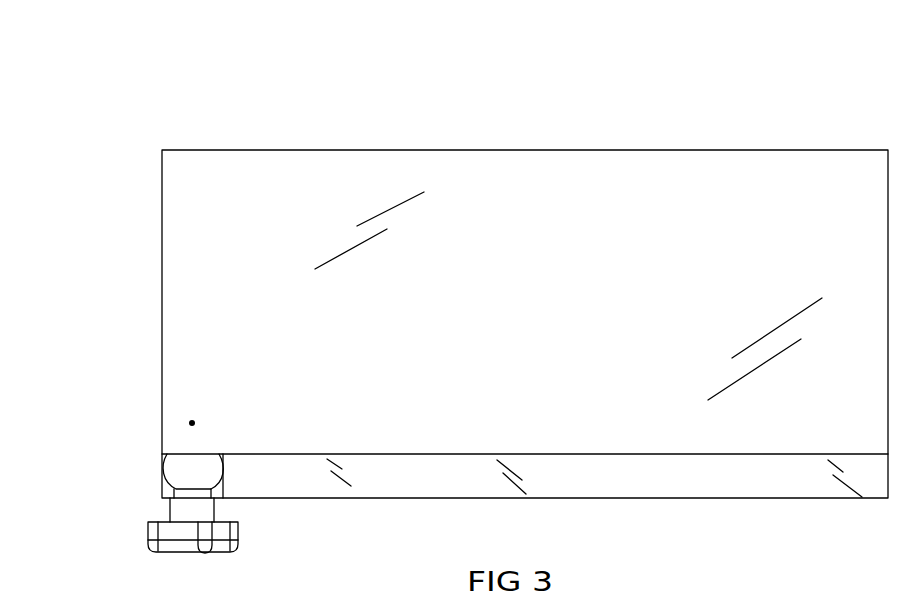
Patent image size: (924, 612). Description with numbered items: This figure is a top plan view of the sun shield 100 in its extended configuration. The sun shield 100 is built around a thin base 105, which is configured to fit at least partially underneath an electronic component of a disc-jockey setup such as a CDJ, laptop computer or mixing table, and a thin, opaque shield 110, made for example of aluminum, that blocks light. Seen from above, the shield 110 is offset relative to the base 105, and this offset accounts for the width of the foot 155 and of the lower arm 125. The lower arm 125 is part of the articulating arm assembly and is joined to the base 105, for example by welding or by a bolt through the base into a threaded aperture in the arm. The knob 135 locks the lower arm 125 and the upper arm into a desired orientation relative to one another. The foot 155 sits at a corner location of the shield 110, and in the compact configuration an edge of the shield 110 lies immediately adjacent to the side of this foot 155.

The sun shield 100 is at (856, 49).
The base 105 is at (740, 494).
The shield 110 is at (734, 273).
The lower arm 125 is at (208, 485).
The knob 135 is at (148, 537).
The foot 155 is at (225, 478).